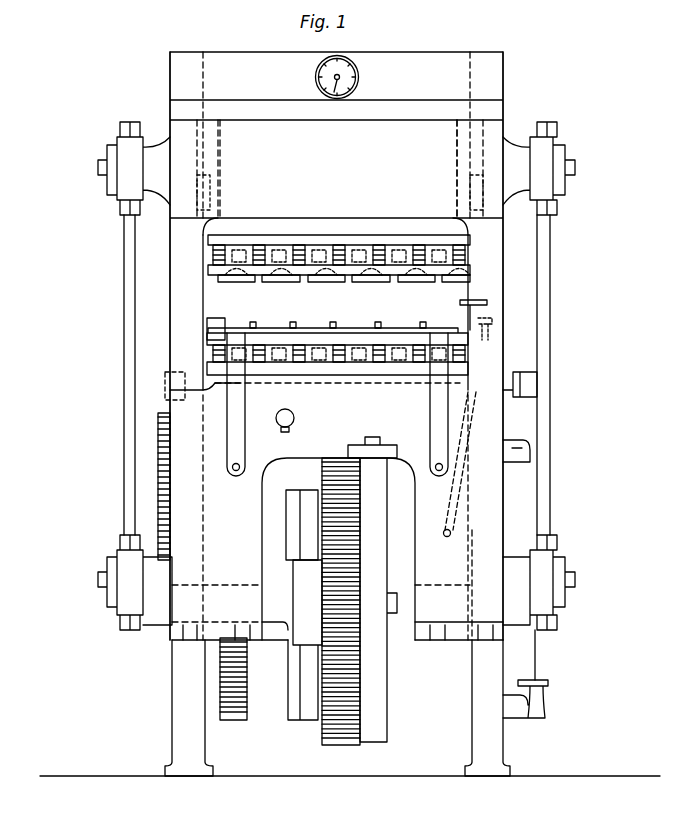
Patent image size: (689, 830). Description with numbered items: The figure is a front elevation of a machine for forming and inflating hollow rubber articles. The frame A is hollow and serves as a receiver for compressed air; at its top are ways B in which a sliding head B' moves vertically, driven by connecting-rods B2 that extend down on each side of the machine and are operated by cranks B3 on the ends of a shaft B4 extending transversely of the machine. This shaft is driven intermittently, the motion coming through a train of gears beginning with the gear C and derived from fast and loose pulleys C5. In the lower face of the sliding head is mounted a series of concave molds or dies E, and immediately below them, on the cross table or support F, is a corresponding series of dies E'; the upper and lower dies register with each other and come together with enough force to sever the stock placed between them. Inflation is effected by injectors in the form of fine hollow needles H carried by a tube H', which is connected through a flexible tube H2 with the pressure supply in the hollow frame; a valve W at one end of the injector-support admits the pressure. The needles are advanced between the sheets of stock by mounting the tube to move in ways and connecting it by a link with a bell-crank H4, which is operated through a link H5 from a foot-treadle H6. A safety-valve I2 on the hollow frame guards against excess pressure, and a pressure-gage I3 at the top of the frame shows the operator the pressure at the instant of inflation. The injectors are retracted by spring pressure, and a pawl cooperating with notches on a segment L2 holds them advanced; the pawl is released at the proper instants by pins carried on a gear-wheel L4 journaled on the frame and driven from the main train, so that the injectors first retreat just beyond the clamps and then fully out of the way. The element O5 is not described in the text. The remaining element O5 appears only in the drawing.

The pressure-gage I3 is at (359, 77).
The sliding head B' is at (337, 169).
The ways B is at (336, 346).
The connecting-rods B2 is at (572, 350).
The cranks B3 is at (580, 605).
The concave molds or dies E is at (339, 269).
The cross table or support F is at (325, 380).
The tube H' is at (267, 313).
The hollow needles H is at (337, 386).
The dies E' is at (373, 313).
The valve W is at (495, 330).
The flexible tube H2 is at (478, 365).
The bell-crank H4 is at (537, 392).
The segment L2 is at (170, 407).
The safety-valve I2 is at (276, 418).
The gear-wheel L4 is at (158, 466).
The fast and loose pulleys C5 is at (305, 478).
The gear C is at (340, 748).
The bar O5 is at (387, 738).
The shaft B4 is at (408, 618).
The frame A is at (456, 585).
The link H5 is at (537, 665).
The foot-treadle H6 is at (548, 688).